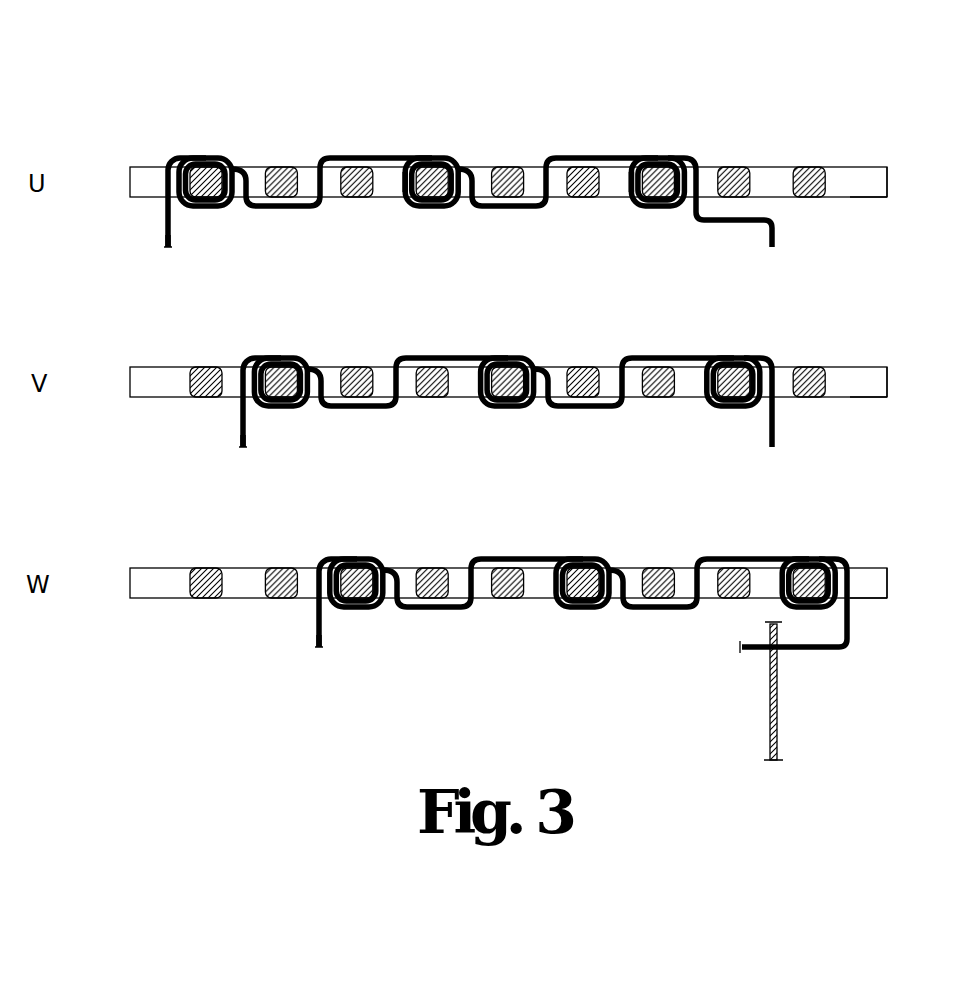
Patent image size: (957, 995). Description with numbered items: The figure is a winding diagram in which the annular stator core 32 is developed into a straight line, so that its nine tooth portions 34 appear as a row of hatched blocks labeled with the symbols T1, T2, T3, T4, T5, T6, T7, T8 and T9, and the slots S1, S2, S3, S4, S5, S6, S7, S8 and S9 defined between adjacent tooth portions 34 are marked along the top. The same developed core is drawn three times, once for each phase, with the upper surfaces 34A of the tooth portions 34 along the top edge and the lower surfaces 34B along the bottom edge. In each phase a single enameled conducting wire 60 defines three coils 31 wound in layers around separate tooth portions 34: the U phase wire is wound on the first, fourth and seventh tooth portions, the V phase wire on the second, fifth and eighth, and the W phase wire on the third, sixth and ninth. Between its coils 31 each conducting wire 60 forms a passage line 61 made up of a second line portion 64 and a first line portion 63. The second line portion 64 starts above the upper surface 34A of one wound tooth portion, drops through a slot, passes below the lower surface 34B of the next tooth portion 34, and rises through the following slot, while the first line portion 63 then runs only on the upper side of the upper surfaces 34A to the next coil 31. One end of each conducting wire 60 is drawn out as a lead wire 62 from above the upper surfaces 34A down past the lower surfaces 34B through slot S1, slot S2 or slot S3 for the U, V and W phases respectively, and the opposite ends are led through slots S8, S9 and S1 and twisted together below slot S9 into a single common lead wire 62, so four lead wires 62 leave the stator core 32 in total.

The coil 31 is at (195, 158).
The stator core 32 is at (122, 158).
The tooth portion 34 is at (210, 166).
The upper surface 34A is at (887, 157).
The lower surface 34B is at (885, 205).
The conducting wire 60 is at (165, 232).
The passage line 61 is at (378, 146).
The lead wire 62 is at (182, 221).
The first line portion 63 is at (404, 180).
The second line portion 64 is at (293, 209).
The slot S1 is at (150, 157).
The slot S2 is at (253, 157).
The slot S3 is at (308, 157).
The slot S4 is at (385, 157).
The slot S5 is at (477, 157).
The slot S6 is at (537, 157).
The slot S7 is at (602, 157).
The slot S8 is at (705, 157).
The slot S9 is at (768, 157).
The first tooth portion T1 is at (219, 146).
The second tooth portion T2 is at (294, 146).
The third tooth portion T3 is at (370, 146).
The fourth tooth portion T4 is at (445, 146).
The fifth tooth portion T5 is at (521, 146).
The sixth tooth portion T6 is at (596, 146).
The seventh tooth portion T7 is at (671, 146).
The eighth tooth portion T8 is at (747, 146).
The ninth tooth portion T9 is at (822, 146).